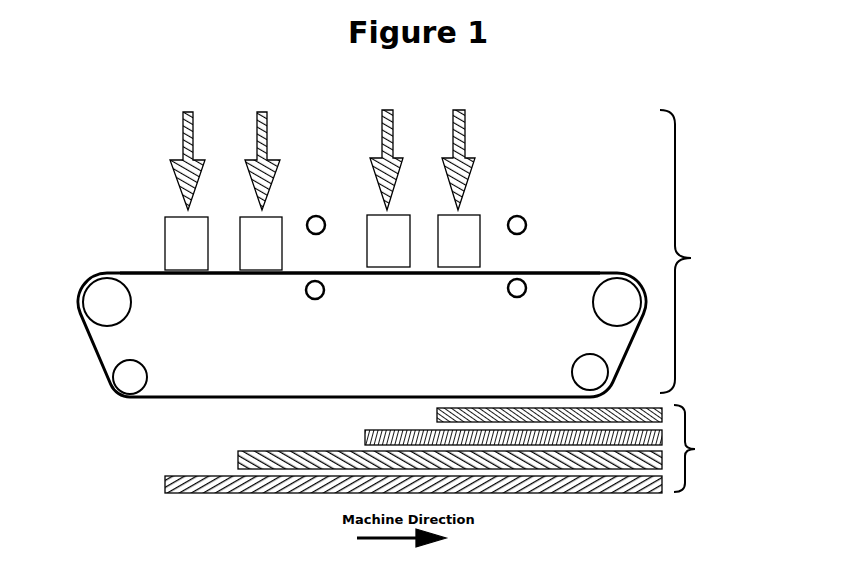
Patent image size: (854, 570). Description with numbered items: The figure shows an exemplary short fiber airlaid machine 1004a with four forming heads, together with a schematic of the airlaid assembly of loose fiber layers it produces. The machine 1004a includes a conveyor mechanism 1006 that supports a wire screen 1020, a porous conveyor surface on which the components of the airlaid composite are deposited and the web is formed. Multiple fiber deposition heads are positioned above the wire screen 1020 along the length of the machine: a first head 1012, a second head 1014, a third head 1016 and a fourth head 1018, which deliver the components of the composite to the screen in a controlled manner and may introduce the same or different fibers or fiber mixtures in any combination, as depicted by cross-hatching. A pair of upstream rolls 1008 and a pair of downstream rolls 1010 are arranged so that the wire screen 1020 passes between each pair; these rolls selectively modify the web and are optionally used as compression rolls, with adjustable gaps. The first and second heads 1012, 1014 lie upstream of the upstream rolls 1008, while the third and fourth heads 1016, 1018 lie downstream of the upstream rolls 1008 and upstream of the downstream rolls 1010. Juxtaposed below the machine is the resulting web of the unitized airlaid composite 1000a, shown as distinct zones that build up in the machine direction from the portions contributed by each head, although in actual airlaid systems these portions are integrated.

The unitized airlaid composite 1000a is at (463, 449).
The short fiber airlaid machine 1004a is at (713, 251).
The conveyor mechanism 1006 is at (157, 398).
The upstream rolls 1008 is at (317, 213).
The downstream rolls 1010 is at (517, 213).
The first head 1012 is at (188, 248).
The second head 1014 is at (262, 248).
The third head 1016 is at (388, 247).
The fourth head 1018 is at (458, 247).
The wire screen 1020 is at (132, 273).